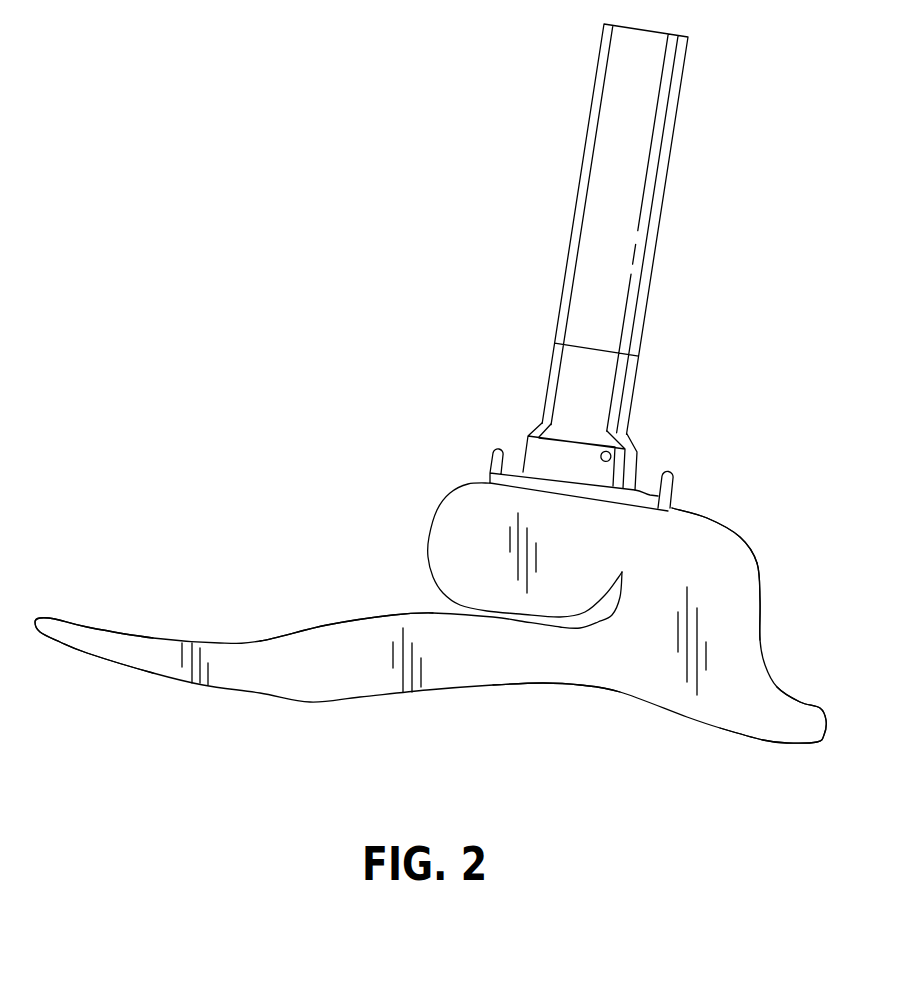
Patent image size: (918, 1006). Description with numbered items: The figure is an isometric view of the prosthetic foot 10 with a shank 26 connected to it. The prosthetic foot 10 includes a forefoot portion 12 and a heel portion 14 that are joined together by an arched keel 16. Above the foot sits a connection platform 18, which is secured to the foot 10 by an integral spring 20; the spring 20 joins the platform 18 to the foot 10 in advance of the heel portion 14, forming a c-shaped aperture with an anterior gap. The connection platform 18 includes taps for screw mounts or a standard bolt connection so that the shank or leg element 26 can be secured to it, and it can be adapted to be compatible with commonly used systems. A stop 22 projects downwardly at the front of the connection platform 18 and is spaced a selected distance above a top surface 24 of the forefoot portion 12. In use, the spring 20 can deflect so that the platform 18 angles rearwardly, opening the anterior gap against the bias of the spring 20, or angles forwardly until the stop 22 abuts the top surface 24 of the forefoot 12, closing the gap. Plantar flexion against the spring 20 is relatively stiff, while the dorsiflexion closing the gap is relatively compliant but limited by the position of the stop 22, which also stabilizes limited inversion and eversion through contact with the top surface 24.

The prosthetic foot 10 is at (357, 417).
The forefoot portion 12 is at (93, 645).
The heel portion 14 is at (792, 728).
The arched keel 16 is at (548, 683).
The connection platform 18 is at (705, 525).
The integral spring 20 is at (742, 580).
The stop 22 is at (443, 532).
The top surface 24 is at (392, 617).
The shank 26 is at (593, 177).